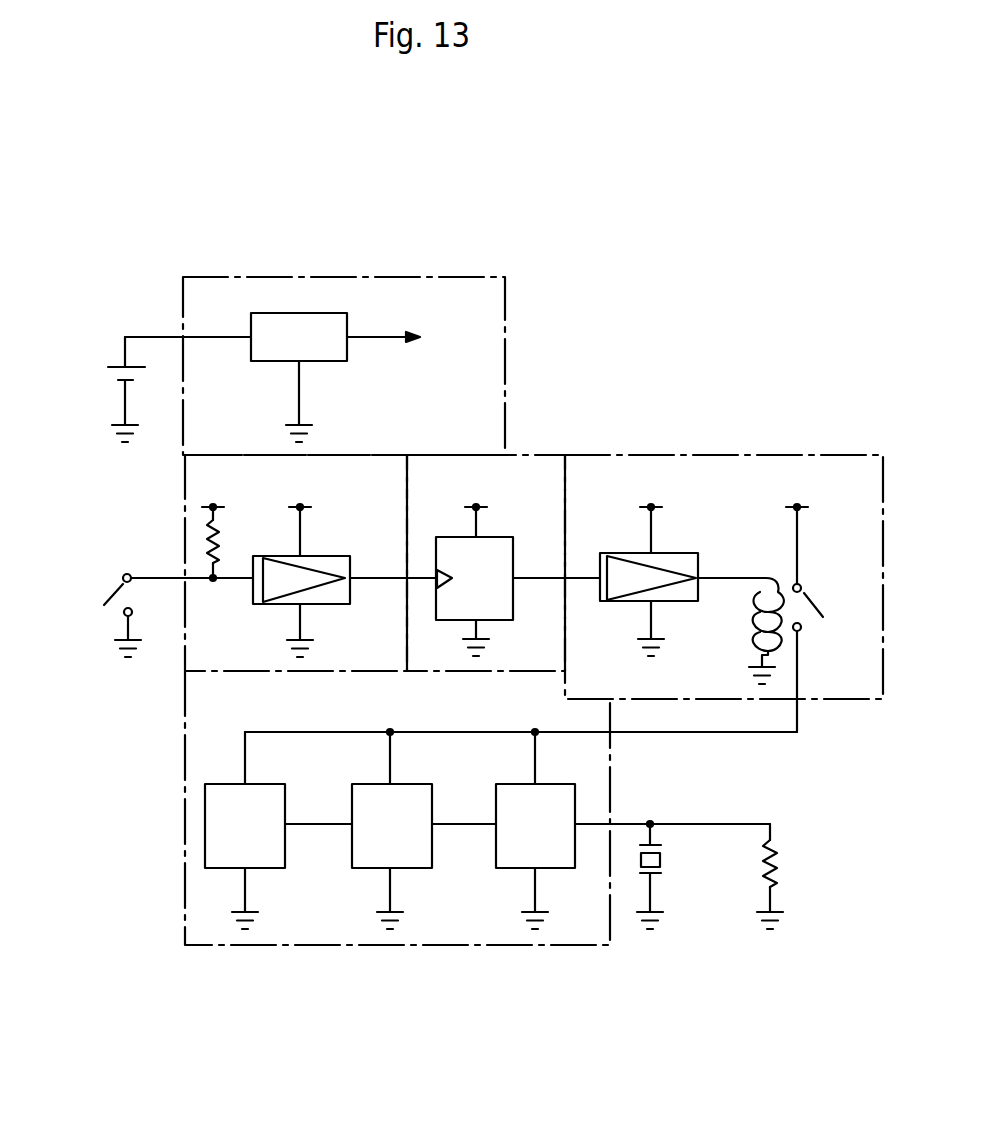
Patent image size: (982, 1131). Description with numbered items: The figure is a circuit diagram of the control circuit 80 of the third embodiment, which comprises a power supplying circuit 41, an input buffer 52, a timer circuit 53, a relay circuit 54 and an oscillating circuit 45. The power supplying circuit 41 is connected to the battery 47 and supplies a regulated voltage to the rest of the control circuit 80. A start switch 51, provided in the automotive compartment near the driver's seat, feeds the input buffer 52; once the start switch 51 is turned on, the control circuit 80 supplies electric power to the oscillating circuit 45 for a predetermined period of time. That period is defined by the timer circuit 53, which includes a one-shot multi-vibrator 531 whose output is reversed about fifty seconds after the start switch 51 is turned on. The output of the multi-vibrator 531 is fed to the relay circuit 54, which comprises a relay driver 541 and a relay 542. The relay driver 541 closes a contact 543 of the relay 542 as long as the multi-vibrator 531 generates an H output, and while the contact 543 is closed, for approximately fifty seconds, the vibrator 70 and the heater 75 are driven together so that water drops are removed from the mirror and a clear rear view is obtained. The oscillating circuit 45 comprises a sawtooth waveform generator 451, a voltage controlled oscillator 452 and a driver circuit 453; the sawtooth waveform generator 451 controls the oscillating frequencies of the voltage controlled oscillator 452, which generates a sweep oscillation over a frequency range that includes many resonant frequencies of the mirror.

The power supplying circuit 41 is at (367, 277).
The battery 47 is at (113, 380).
The start switch 51 is at (120, 588).
The input buffer 52 is at (183, 647).
The timer circuit 53 is at (503, 507).
The relay circuit 54 is at (724, 542).
The control circuit 80 is at (597, 419).
The one-shot multi-vibrator 531 is at (513, 602).
The relay driver 541 is at (680, 602).
The relay 542 is at (843, 560).
The contact 543 is at (808, 615).
The oscillating circuit 45 is at (491, 808).
The sawtooth waveform generator 451 is at (273, 860).
The voltage controlled oscillator 452 is at (418, 860).
The driver circuit 453 is at (565, 860).
The vibrator 70 is at (662, 860).
The heater 75 is at (780, 860).